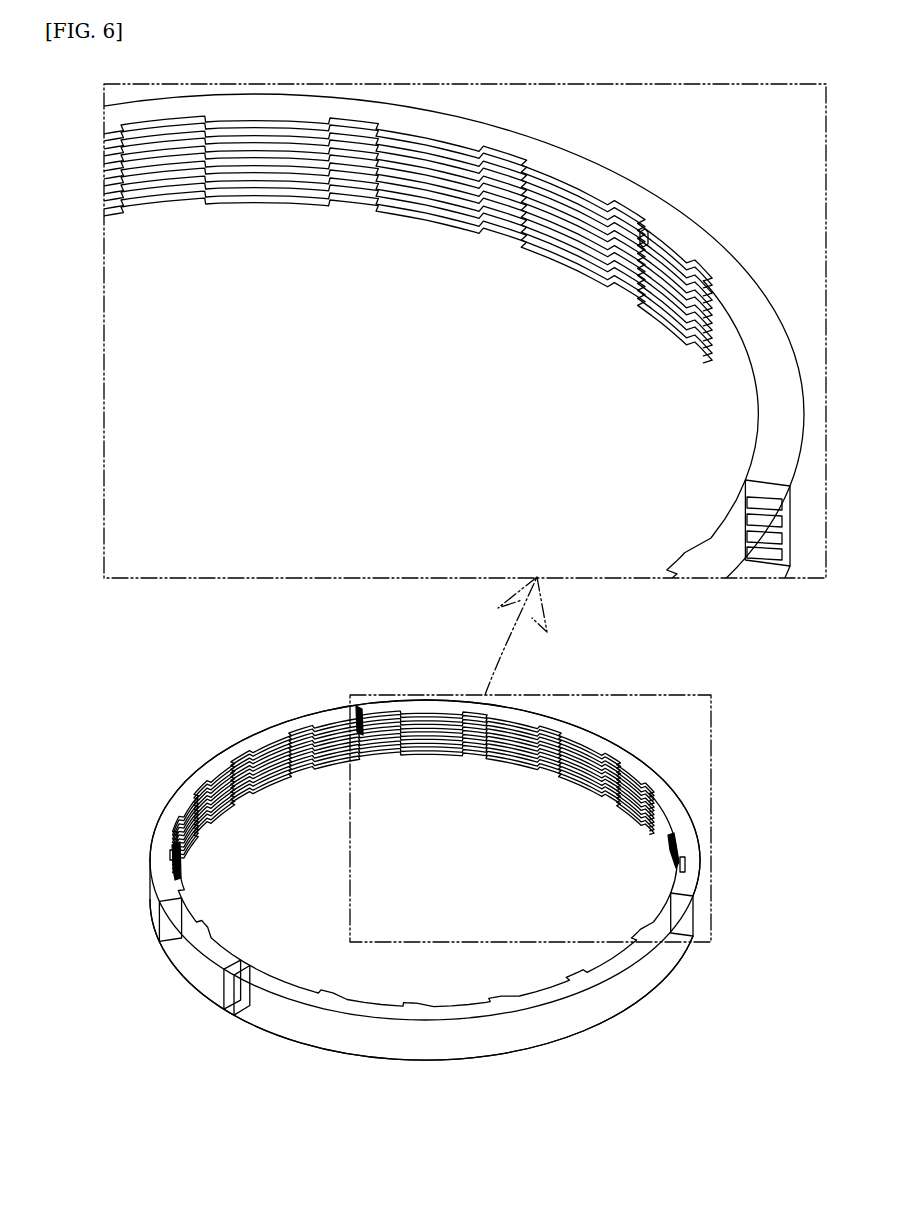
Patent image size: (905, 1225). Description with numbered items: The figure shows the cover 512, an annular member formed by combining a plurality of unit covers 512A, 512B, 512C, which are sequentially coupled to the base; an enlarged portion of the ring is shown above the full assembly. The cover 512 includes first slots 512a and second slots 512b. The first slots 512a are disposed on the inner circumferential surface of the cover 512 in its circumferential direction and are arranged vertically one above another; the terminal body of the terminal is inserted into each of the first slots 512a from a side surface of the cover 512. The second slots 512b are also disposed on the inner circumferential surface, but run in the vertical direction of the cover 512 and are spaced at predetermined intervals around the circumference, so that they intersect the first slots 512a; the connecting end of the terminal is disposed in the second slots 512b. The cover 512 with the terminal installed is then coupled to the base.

The cover 512 is at (200, 692).
The unit cover 512A is at (665, 788).
The unit cover 512B is at (200, 785).
The unit cover 512C is at (420, 1012).
The first slots 512a is at (722, 519).
The second slots 512b is at (653, 240).